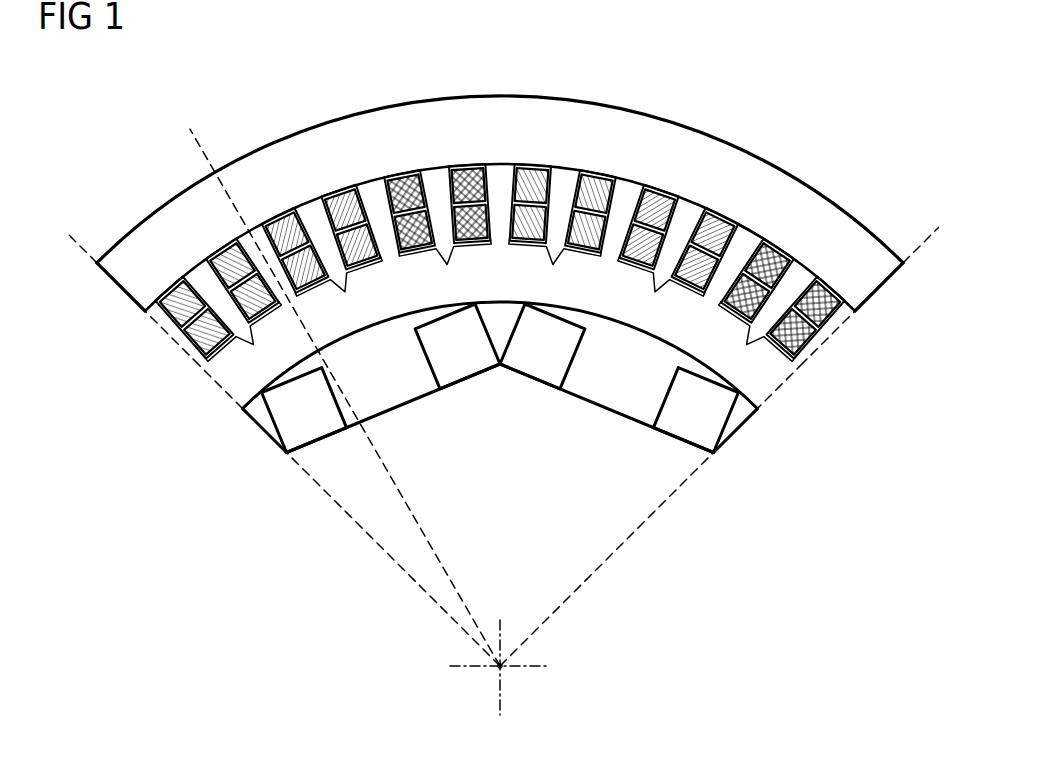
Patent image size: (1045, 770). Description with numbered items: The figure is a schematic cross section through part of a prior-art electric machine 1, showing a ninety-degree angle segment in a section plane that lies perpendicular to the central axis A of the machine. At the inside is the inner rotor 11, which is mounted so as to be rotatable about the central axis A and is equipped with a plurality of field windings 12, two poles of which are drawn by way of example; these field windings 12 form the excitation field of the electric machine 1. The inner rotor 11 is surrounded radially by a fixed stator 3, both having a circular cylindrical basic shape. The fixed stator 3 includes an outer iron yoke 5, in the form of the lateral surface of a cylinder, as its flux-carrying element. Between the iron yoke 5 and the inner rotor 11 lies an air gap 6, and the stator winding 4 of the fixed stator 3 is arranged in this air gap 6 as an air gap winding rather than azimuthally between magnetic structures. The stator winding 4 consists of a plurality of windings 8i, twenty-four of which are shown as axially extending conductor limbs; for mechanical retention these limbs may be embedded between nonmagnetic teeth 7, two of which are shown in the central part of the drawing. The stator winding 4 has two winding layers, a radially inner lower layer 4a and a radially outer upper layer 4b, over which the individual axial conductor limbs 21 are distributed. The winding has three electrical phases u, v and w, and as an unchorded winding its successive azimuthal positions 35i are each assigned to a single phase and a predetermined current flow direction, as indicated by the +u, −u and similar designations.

The electric machine 1 is at (245, 98).
The fixed stator 3 is at (498, 264).
The stator winding 4 is at (491, 250).
The lower layer 4a is at (823, 358).
The upper layer 4b is at (851, 328).
The iron yoke 5 is at (890, 268).
The air gap 6 is at (222, 386).
The nonmagnetic teeth 7 is at (373, 188).
The windings 8i is at (656, 195).
The inner rotor 11 is at (481, 504).
The field windings 12 is at (686, 458).
The axial conductor limbs 21 is at (738, 208).
The azimuthal positions 35i is at (282, 397).
The central axis A is at (505, 669).